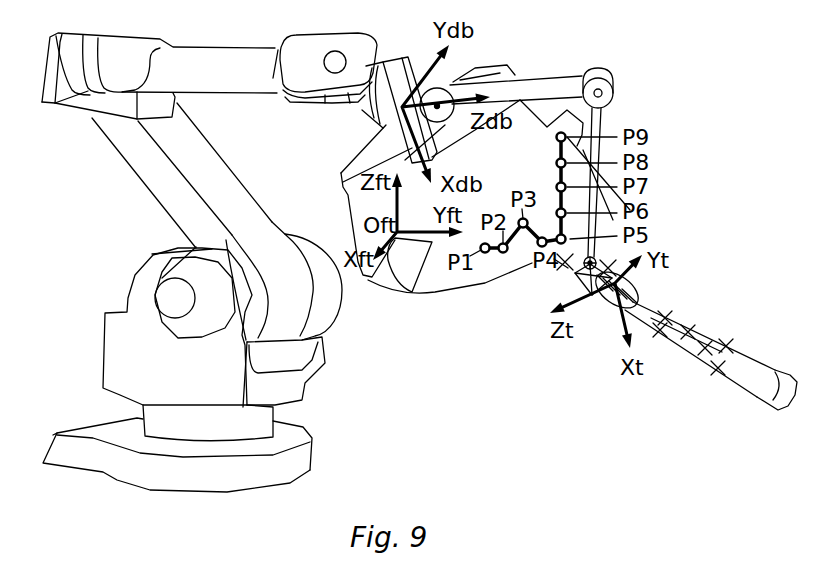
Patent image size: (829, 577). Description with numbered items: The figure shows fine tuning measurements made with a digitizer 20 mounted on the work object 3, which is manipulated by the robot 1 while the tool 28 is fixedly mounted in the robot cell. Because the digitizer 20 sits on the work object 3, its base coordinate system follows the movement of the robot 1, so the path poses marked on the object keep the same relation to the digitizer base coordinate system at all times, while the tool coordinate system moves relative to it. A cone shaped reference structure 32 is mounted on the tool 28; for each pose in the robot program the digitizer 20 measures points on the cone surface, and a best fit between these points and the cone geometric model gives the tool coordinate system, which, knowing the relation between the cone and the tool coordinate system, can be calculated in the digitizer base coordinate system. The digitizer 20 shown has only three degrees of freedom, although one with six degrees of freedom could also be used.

The industrial robot 1 is at (88, 202).
The work object 3 is at (440, 282).
The digitizer 20 is at (547, 82).
The tool 28 is at (641, 291).
The reference structure 32 is at (574, 274).